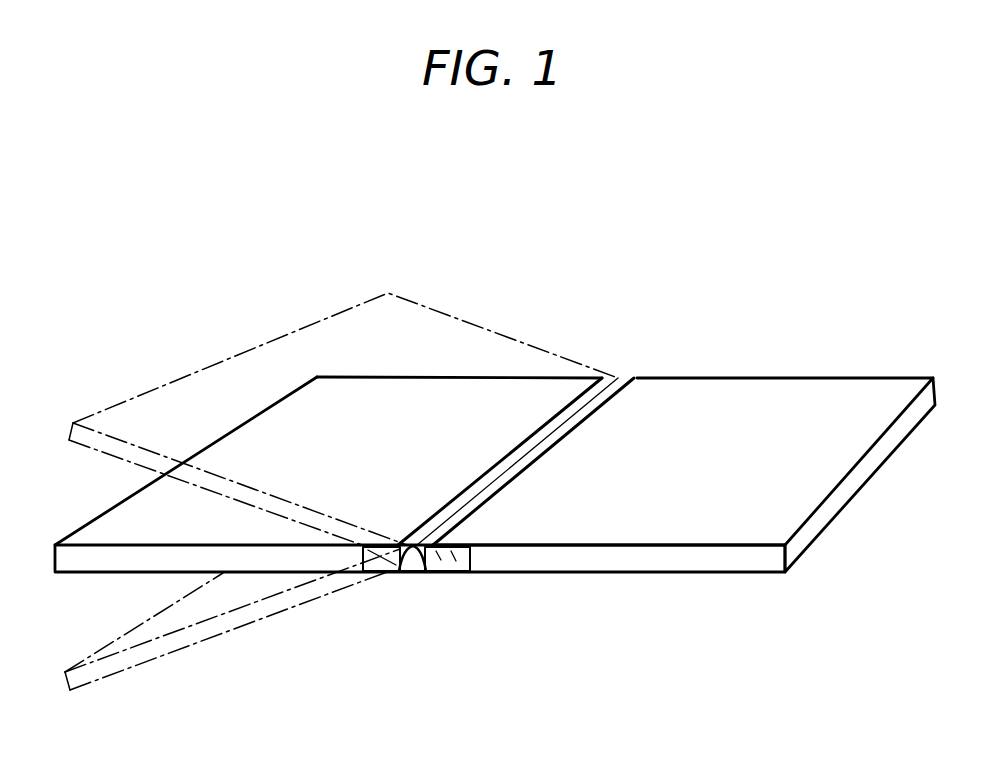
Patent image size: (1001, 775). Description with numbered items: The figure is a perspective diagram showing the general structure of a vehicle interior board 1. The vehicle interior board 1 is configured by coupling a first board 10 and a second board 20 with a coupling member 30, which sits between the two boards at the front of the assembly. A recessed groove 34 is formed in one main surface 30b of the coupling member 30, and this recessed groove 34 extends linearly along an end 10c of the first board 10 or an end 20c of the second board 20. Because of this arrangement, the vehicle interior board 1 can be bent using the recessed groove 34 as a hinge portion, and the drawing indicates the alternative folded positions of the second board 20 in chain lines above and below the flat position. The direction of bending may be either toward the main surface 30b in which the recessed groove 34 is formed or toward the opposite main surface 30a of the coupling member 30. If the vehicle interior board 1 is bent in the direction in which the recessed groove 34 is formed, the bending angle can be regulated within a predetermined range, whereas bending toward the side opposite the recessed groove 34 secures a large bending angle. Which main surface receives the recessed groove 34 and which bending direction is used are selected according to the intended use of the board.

The vehicle interior board 1 is at (495, 427).
The first board 10 is at (495, 423).
The end of the first board 10c is at (596, 405).
The second board 20 is at (336, 482).
The end of the second board 20c is at (474, 485).
The coupling member 30 is at (454, 520).
The main surface opposite to the recessed groove 30a is at (433, 520).
The main surface with the recessed groove 30b is at (399, 573).
The recessed groove 34 is at (416, 573).